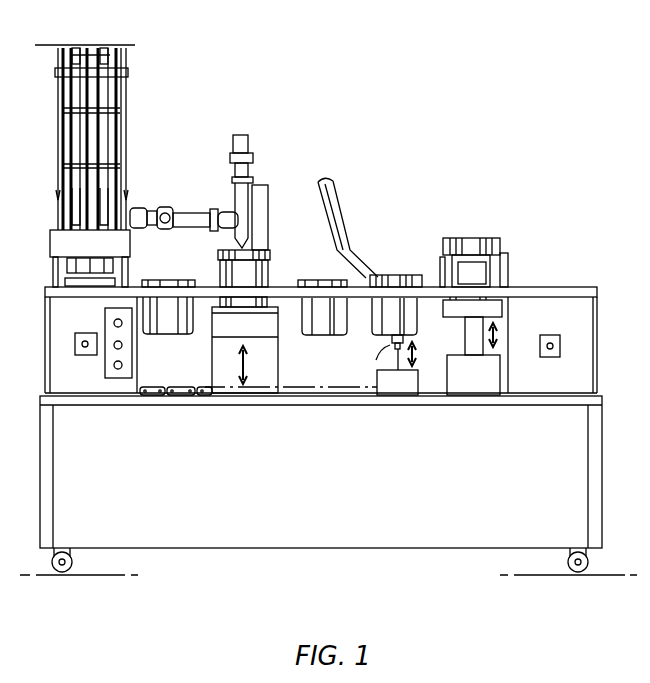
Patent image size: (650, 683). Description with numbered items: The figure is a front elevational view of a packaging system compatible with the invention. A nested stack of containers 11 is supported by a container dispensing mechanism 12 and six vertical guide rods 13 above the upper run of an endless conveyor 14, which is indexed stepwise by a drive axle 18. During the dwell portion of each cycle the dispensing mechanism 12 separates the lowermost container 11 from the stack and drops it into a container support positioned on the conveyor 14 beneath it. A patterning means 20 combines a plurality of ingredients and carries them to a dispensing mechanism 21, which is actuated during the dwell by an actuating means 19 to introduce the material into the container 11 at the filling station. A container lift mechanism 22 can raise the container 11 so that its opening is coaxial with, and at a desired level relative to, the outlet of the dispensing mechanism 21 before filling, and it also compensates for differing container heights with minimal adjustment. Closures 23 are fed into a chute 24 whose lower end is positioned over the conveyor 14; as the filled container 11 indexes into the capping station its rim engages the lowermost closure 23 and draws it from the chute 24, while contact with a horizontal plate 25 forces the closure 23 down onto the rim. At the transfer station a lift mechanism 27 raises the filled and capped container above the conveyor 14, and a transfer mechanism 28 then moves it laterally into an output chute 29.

The container 11 is at (78, 143).
The container dispensing mechanism 12 is at (50, 248).
The vertical guide rods 13 is at (104, 45).
The endless conveyor 14 is at (158, 387).
The drive axle 18 is at (85, 343).
The actuating means 19 is at (250, 142).
The patterning means 20 is at (176, 228).
The dispensing mechanism 21 is at (235, 197).
The container lift mechanism 22 is at (274, 362).
The closure 23 is at (468, 238).
The chute 24 is at (342, 212).
The horizontal plate 25 is at (386, 275).
The lift mechanism 27 is at (489, 386).
The transfer mechanism 28 is at (484, 283).
The output chute 29 is at (508, 268).